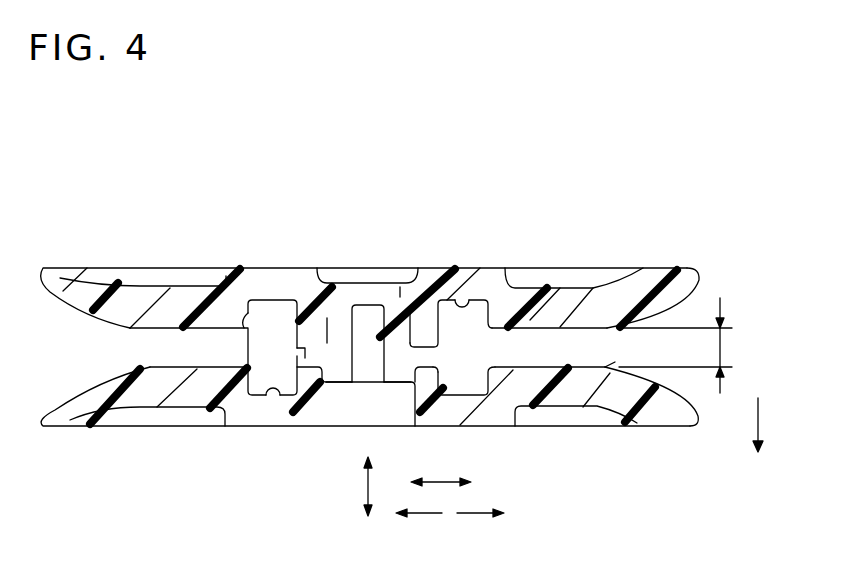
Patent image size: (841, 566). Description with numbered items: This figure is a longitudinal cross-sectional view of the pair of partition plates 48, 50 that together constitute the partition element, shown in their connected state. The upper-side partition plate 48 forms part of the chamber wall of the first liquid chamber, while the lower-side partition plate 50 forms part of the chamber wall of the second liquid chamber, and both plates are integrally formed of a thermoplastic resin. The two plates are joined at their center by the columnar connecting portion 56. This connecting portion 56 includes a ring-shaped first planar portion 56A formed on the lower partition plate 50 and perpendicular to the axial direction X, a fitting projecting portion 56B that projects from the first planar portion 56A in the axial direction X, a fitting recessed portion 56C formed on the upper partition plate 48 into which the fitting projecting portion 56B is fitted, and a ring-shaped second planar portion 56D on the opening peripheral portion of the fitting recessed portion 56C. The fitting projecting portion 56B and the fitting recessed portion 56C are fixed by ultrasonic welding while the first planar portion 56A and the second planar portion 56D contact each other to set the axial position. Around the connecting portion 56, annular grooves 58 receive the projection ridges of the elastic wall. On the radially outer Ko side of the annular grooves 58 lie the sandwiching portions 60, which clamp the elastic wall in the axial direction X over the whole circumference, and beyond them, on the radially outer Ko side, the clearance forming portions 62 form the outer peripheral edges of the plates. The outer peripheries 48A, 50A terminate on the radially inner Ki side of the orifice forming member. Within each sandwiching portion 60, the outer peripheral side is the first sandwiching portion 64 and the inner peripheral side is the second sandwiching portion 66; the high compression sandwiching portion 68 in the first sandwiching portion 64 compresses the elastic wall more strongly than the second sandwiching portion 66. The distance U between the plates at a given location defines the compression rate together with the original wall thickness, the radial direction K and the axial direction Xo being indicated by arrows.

The partition plate 48 is at (480, 268).
The outer periphery 48A is at (700, 277).
The partition plate 50 is at (516, 428).
The outer periphery 50A is at (697, 425).
The connecting portion 56 is at (366, 302).
The first planar portion 56A is at (425, 370).
The fitting projecting portion 56B is at (350, 320).
The fitting recessed portion 56C is at (338, 322).
The second planar portion 56D is at (300, 364).
The annular groove 58 is at (460, 300).
The sandwiching portion 60 is at (560, 297).
The clearance forming portion 62 is at (678, 278).
The first sandwiching portion 64 is at (583, 370).
The second sandwiching portion 66 is at (426, 349).
The high compression sandwiching portion 68 is at (606, 366).
The distance between the pair of partition plates U is at (722, 348).
The axial direction X is at (378, 486).
The axial direction Xo is at (779, 425).
The radial direction K is at (441, 469).
The radially inner side Ki is at (419, 528).
The radially outer side Ko is at (480, 528).